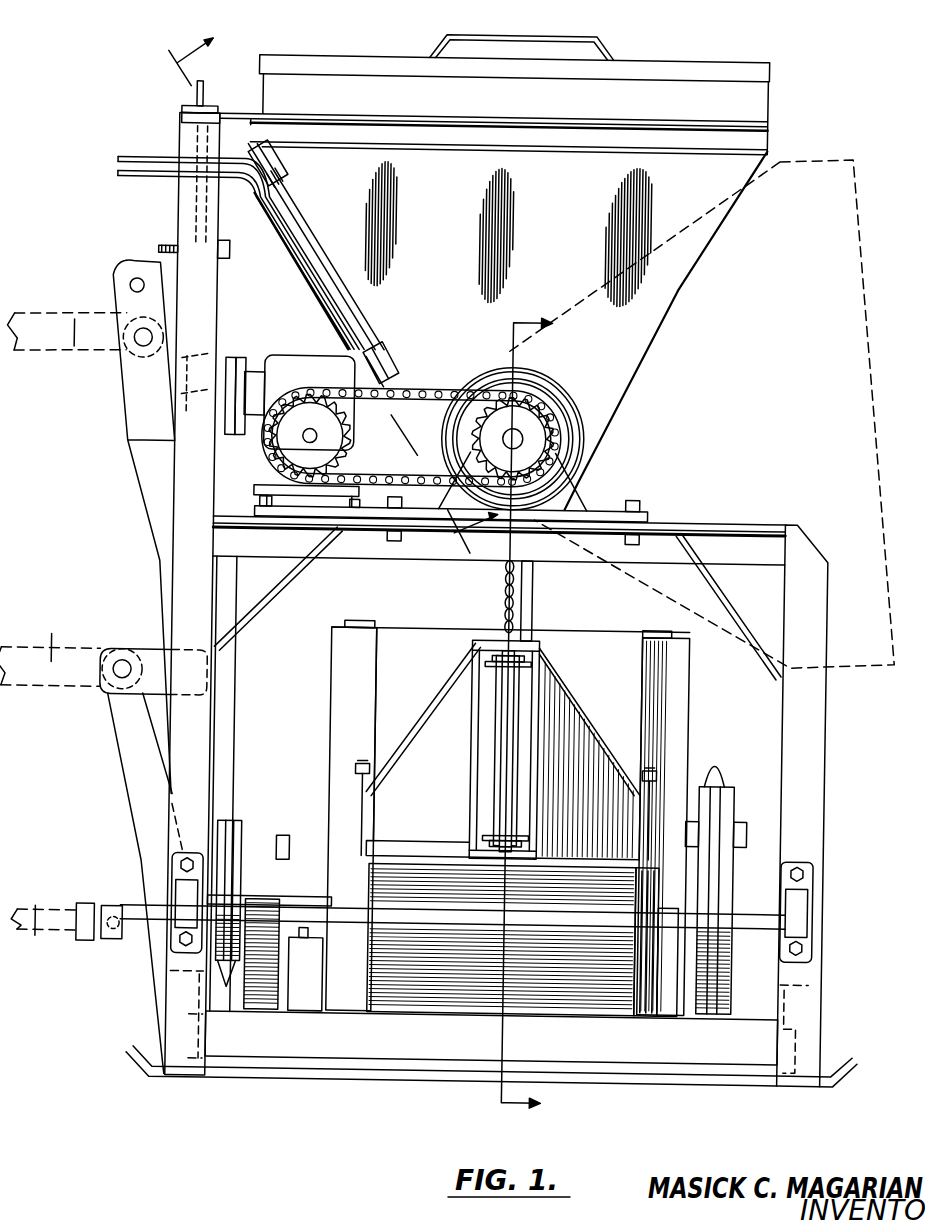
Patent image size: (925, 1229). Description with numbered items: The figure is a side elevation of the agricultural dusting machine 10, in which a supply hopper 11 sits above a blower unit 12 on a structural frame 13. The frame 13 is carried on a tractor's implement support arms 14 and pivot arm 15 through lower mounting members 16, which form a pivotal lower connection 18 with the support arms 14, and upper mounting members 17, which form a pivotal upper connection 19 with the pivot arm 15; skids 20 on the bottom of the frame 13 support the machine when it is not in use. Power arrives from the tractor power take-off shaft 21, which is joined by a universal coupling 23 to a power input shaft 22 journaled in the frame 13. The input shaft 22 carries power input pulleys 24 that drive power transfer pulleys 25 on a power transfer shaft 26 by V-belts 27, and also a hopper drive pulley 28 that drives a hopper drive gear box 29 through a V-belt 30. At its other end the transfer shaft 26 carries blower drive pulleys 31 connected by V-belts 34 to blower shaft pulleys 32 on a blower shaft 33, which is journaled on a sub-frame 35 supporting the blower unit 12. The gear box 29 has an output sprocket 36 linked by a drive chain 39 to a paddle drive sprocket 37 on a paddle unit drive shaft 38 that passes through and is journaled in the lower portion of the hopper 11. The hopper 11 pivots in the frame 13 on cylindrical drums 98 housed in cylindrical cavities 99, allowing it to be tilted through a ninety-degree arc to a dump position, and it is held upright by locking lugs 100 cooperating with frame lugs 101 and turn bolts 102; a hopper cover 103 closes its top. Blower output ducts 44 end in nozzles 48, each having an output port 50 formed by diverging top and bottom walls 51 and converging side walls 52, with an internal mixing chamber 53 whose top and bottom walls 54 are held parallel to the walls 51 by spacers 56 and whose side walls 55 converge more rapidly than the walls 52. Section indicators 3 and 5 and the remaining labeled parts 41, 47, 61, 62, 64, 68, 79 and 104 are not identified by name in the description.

The section line 3- 3 is at (527, 715).
The section line 5- 5 is at (333, 292).
The agricultural dusting machine 10 is at (786, 153).
The supply hopper 11 is at (689, 261).
The blower unit 12 is at (432, 628).
The structural frame 13 is at (178, 523).
The implement support arms 14 is at (55, 635).
The pivot arm 15 is at (69, 379).
The lower mounting members 16 is at (158, 650).
The upper mounting members 17 is at (148, 410).
The pivotal lower connection 18 is at (118, 684).
The pivotal upper connection 19 is at (132, 333).
The skids 20 is at (412, 1082).
The tractor power take-off shaft 21 is at (43, 946).
The power input shaft 22 is at (140, 928).
The universal coupling 23 is at (92, 908).
The power input pulleys 24 is at (286, 836).
The power transfer pulleys 25 is at (300, 888).
The power transfer shaft 26 is at (352, 912).
The V-belts 27 is at (234, 822).
The hopper drive pulley 28 is at (231, 992).
The hopper drive gear box 29 is at (320, 355).
The V-belt 30 is at (236, 725).
The blower drive pulleys 31 is at (742, 818).
The blower shaft pulleys 32 is at (738, 786).
The blower shaft 33 is at (748, 845).
The V-belts 34 is at (718, 762).
The sub-frame 35 is at (345, 658).
The output sprocket 36 is at (332, 438).
The paddle drive sprocket 37 is at (540, 448).
The paddle unit drive shaft 38 is at (522, 432).
The drive chain 39 is at (455, 392).
The bin 41 is at (575, 631).
The blower output ducts 44 is at (596, 676).
The shelf 47 is at (337, 901).
The nozzles 48 is at (421, 715).
The output port 50 is at (478, 755).
The top and bottom walls 51 is at (497, 660).
The side walls 52 is at (583, 745).
The mixing chamber 53 is at (525, 704).
The mixing chamber top and bottom walls 54 is at (493, 660).
The mixing chamber side walls 55 is at (504, 735).
The spacers 56 is at (500, 652).
The end plate 61 is at (658, 962).
The bolt 62 is at (361, 768).
The chain 64 is at (505, 593).
The rod 68 is at (533, 582).
The rods 79 is at (114, 164).
The cylindrical drums 98 is at (548, 394).
The cylindrical cavities 99 is at (540, 378).
The locking lugs 100 is at (175, 127).
The frame lugs 101 is at (174, 113).
The turn bolts 102 is at (195, 217).
The hopper cover 103 is at (738, 58).
The handle 104 is at (600, 33).